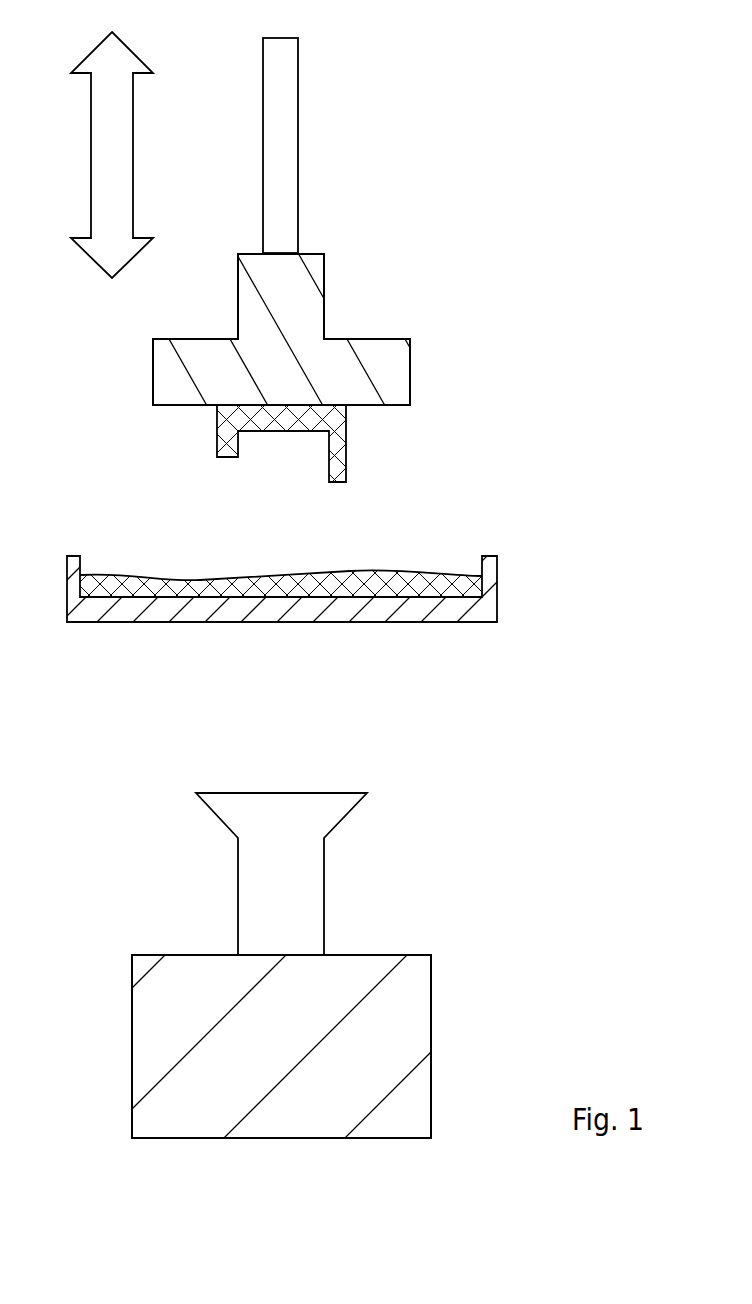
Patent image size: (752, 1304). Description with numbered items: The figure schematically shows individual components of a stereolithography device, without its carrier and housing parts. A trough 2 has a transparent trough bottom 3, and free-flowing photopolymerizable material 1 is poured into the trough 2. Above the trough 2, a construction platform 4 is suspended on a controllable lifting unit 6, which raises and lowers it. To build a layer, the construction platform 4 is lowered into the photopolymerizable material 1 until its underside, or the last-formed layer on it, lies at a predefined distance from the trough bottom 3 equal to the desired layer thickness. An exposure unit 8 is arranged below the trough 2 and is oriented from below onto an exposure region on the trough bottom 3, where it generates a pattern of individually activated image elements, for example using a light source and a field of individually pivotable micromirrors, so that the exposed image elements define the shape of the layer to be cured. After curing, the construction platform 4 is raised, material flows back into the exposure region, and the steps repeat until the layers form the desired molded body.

The photopolymerizable material 1 is at (397, 572).
The trough 2 is at (272, 607).
The trough bottom 3 is at (368, 622).
The construction platform 4 is at (409, 368).
The lifting unit 6 is at (313, 123).
The exposure unit 8 is at (463, 992).